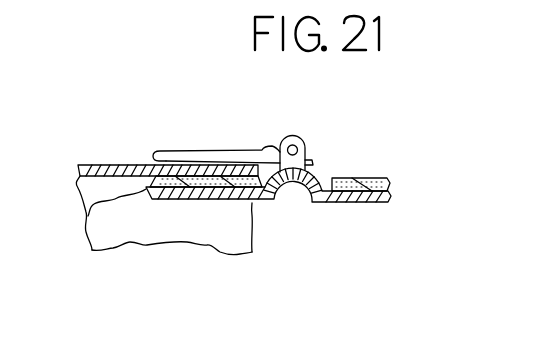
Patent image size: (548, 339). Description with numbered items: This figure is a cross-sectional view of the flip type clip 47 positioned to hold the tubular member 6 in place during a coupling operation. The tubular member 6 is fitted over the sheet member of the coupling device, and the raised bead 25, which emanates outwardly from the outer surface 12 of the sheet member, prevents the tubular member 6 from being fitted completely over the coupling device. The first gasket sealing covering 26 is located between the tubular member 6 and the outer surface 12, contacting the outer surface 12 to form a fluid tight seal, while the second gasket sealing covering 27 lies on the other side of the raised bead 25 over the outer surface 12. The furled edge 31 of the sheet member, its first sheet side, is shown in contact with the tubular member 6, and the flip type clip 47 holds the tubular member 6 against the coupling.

The tubular member 6 is at (100, 164).
The outer surface 12 is at (177, 200).
The raised bead 25 is at (327, 180).
The first gasket sealing covering 26 is at (378, 177).
The second gasket sealing covering 27 is at (220, 202).
The first sheet side 31 is at (88, 216).
The flip type clip 47 is at (233, 157).